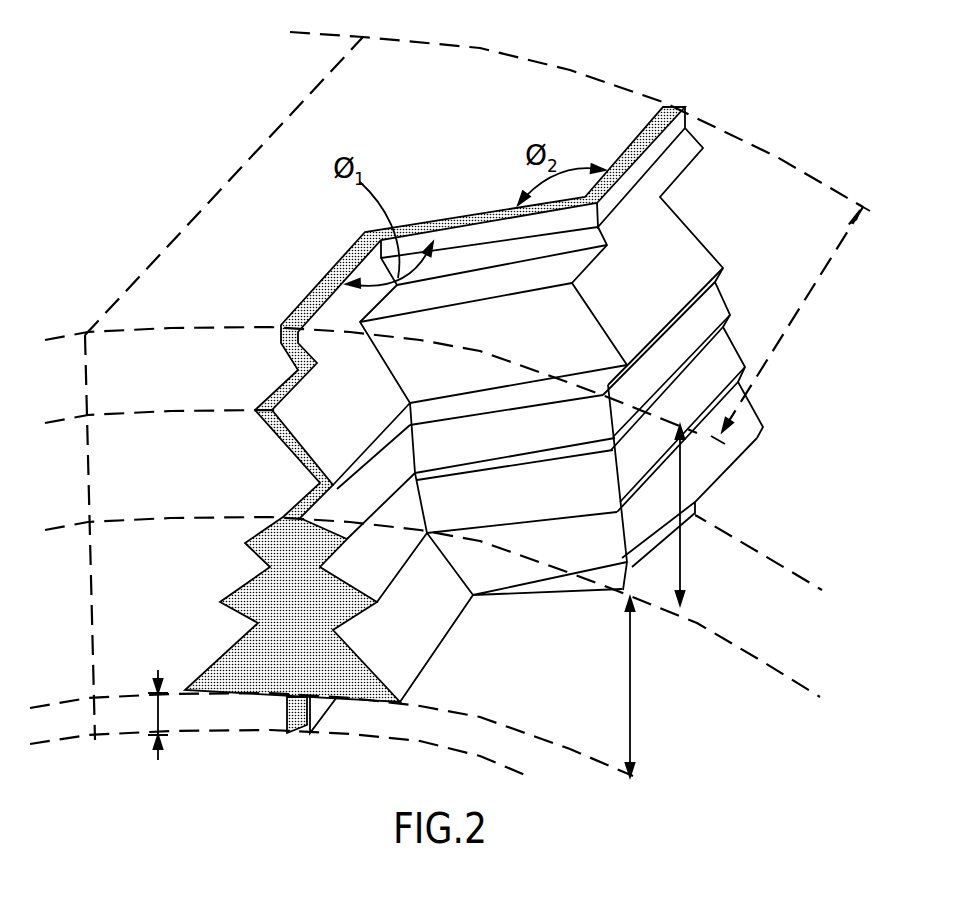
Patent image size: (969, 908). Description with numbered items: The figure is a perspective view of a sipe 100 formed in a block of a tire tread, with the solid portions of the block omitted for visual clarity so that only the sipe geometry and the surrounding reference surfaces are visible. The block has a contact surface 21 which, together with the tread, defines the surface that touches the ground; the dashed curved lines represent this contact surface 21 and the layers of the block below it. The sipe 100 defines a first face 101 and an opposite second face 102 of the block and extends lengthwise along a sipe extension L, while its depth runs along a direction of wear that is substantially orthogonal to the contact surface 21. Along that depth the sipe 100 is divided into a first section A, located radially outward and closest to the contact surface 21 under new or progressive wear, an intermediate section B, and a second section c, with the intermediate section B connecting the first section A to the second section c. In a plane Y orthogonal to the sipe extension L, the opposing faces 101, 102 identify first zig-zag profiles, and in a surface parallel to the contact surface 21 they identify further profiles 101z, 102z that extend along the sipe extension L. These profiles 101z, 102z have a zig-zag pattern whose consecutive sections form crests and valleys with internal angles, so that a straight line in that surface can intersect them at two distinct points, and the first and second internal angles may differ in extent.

The sipe 100 is at (600, 125).
The first face 101 is at (292, 465).
The second face 102 is at (340, 405).
The profile of the first face 101z is at (447, 217).
The profile of the second face 102z is at (645, 140).
The contact surface 21 is at (222, 267).
The first section A is at (692, 515).
The intermediate section B is at (643, 687).
The second section c is at (163, 715).
The sipe extension L is at (790, 323).
The plane Y is at (587, 677).